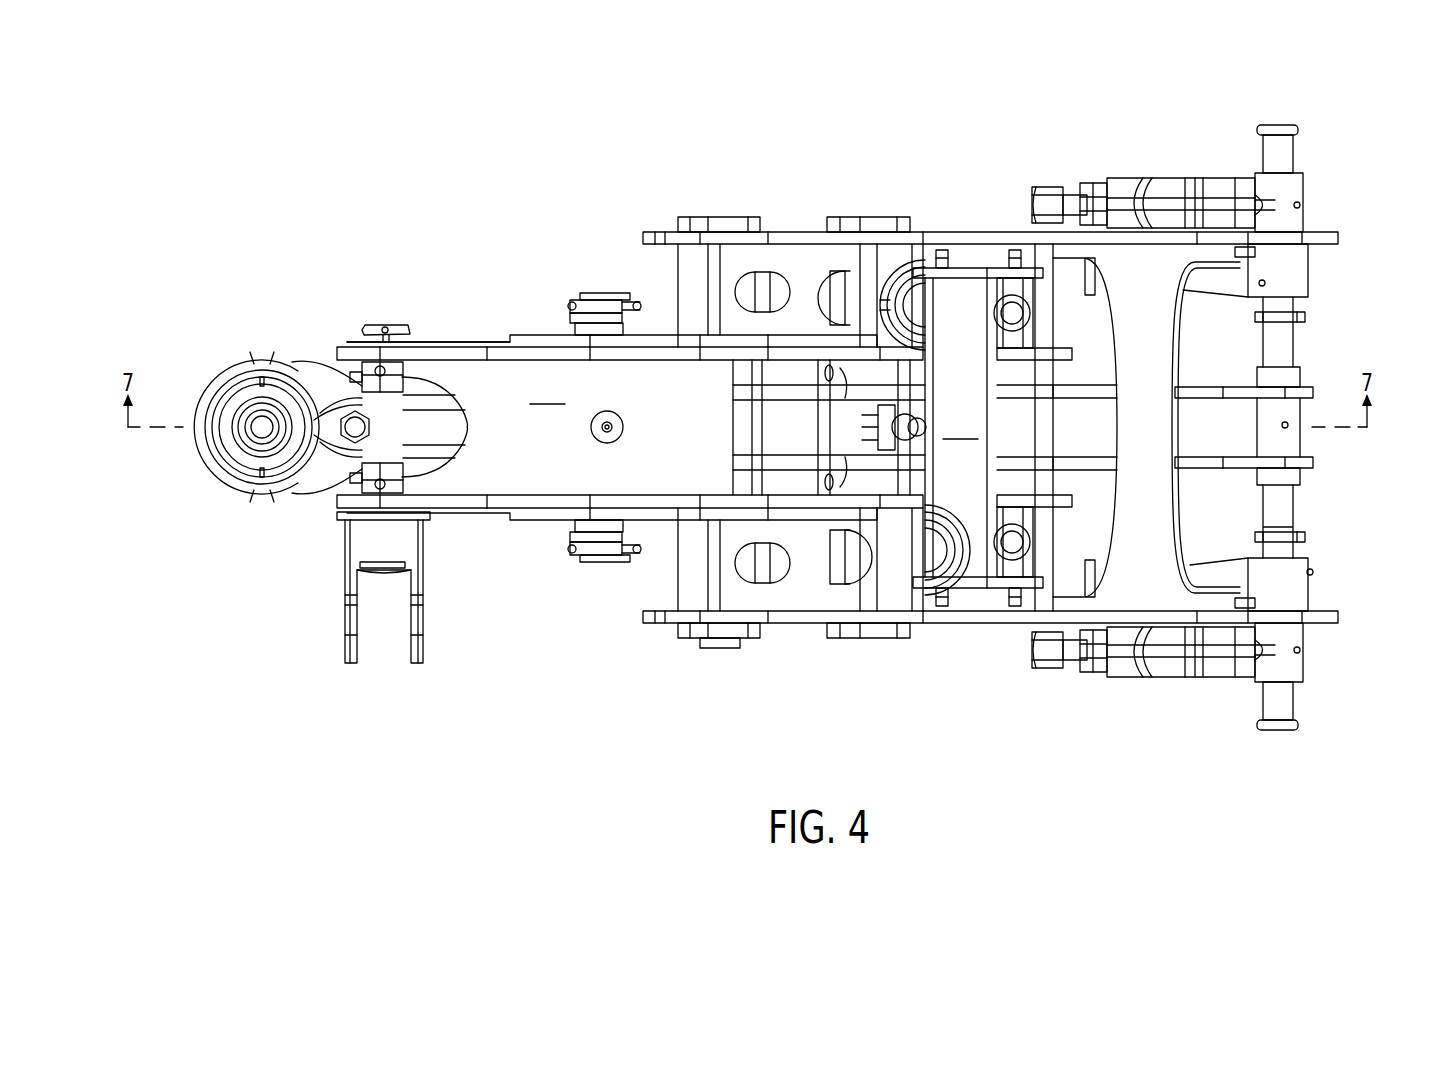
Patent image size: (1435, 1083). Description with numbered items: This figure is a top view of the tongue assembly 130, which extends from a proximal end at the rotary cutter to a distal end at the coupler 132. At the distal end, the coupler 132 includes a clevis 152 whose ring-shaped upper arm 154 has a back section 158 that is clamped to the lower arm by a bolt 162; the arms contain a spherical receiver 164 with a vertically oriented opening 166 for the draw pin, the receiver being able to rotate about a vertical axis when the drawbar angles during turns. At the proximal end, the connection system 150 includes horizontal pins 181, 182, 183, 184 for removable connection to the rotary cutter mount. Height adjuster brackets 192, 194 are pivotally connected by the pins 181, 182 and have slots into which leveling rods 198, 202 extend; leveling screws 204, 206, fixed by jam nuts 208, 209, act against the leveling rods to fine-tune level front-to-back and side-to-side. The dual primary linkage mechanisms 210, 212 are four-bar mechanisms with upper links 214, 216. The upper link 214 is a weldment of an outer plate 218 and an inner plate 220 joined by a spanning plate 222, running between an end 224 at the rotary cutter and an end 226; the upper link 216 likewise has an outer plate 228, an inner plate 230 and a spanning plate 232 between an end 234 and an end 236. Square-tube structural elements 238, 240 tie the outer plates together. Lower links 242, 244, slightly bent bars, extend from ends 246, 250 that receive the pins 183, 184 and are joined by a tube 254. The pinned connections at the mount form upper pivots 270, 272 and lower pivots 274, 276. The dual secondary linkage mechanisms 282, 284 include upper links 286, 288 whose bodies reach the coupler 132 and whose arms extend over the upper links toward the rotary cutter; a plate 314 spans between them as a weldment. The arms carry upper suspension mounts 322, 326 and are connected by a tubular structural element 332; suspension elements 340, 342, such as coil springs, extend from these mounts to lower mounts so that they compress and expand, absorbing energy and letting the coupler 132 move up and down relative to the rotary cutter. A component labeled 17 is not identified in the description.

The bolt 17 is at (387, 325).
The tongue assembly 130 is at (804, 224).
The coupler 132 is at (238, 356).
The connection system 150 is at (1302, 426).
The clevis 152 is at (305, 370).
The upper arm 154 is at (205, 443).
The back section 158 is at (332, 477).
The bolt 162 is at (366, 428).
The spherical receiver 164 is at (230, 408).
The opening 166 is at (259, 427).
The pin 181 is at (1277, 313).
The pin 182 is at (1278, 548).
The pin 183 is at (1278, 347).
The pin 184 is at (1280, 500).
The height adjuster bracket 192 is at (1210, 178).
The height adjuster bracket 194 is at (1203, 680).
The leveling rod 198 is at (1167, 178).
The leveling rod 202 is at (1153, 677).
The leveling screw 204 is at (1043, 203).
The leveling screw 206 is at (1043, 668).
The jam nut 208 is at (1110, 182).
The jam nut 209 is at (1110, 680).
The primary linkage mechanism 210 is at (1109, 170).
The primary linkage mechanism 212 is at (1110, 704).
The upper link 214 is at (775, 232).
The upper link 216 is at (800, 638).
The outer plate 218 is at (792, 243).
The inner plate 220 is at (668, 305).
The spanning plate 222 is at (803, 287).
The end 224 is at (1338, 238).
The end 226 is at (510, 337).
The outer plate 228 is at (958, 613).
The inner plate 230 is at (648, 512).
The spanning plate 232 is at (778, 600).
The end 234 is at (1338, 617).
The end 236 is at (510, 513).
The structural element 238 is at (878, 638).
The structural element 240 is at (728, 645).
The lower link 242 is at (1093, 383).
The lower link 244 is at (1093, 470).
The end 246 is at (1313, 392).
The end 250 is at (1313, 463).
The tube 254 is at (1273, 437).
The upper pivot 270 is at (1309, 293).
The upper pivot 272 is at (1309, 561).
The lower pivot 274 is at (1297, 373).
The lower pivot 276 is at (1300, 482).
The secondary linkage mechanism 282 is at (449, 329).
The secondary linkage mechanism 284 is at (472, 524).
The upper link 286 is at (570, 358).
The upper link 288 is at (688, 522).
The plate 314 is at (728, 427).
The upper suspension mount 322 is at (1005, 310).
The upper suspension mount 326 is at (1005, 545).
The tubular structural element 332 is at (978, 419).
The suspension element 340 is at (905, 308).
The suspension element 342 is at (908, 548).